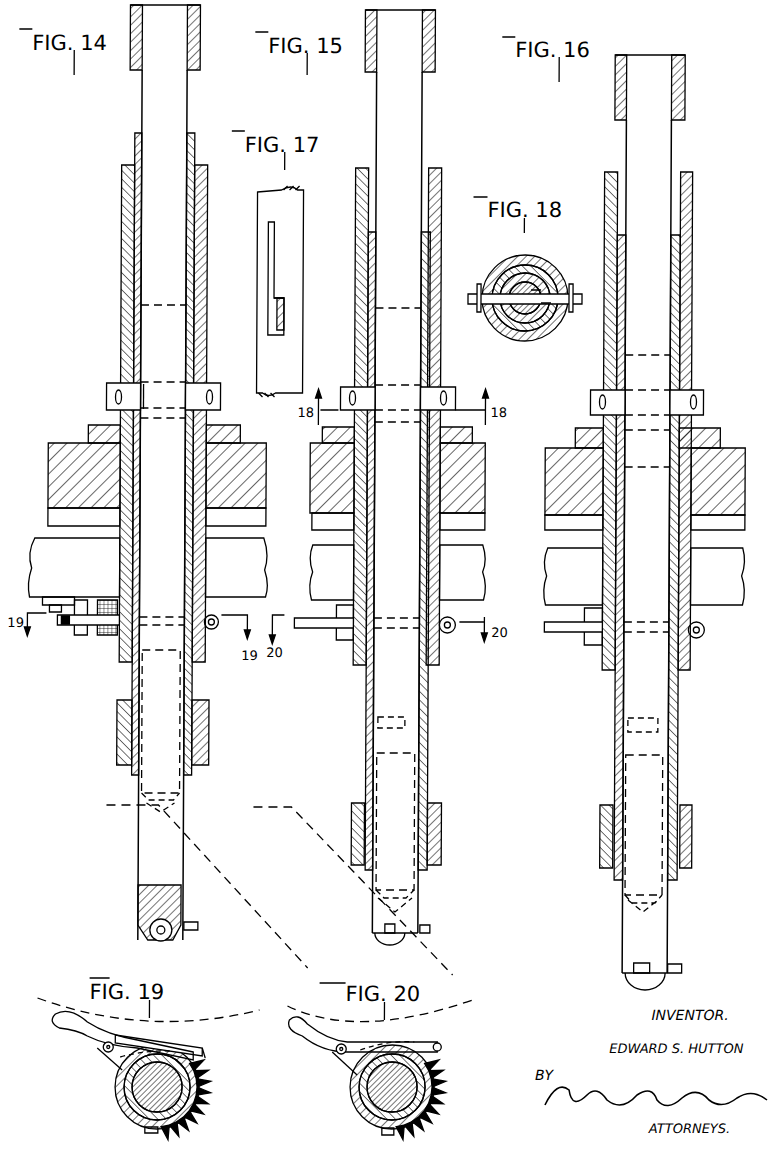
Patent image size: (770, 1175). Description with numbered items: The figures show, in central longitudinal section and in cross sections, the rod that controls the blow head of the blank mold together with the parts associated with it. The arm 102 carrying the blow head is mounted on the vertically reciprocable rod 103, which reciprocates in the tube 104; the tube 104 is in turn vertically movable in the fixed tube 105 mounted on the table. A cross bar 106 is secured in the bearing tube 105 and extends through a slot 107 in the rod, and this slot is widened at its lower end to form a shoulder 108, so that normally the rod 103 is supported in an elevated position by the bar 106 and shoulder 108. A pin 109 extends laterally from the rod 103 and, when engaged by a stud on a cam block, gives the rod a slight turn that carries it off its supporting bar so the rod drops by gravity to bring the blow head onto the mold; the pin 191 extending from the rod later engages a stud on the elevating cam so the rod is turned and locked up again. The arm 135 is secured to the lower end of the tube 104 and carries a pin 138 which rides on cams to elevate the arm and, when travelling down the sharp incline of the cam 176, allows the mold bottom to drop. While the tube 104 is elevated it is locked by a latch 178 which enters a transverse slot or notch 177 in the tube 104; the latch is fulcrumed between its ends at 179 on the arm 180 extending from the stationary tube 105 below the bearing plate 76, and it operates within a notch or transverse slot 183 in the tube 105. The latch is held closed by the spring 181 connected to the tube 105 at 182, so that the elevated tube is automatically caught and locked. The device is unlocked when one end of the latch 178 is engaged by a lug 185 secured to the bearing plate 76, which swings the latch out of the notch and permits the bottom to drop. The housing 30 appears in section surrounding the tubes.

In FIG. 14, the housing block 30 is at (56, 443).
In FIG. 15, the housing block 30 is at (486, 465).
In FIG. 16, the housing block 30 is at (550, 463).
In FIG. 14, the bearing plate 76 is at (38, 553).
In FIG. 15, the bearing plate 76 is at (320, 572).
In FIG. 16, the bearing plate 76 is at (557, 575).
In FIG. 19, the bearing plate 76 is at (50, 1004).
In FIG. 20, the bearing plate 76 is at (292, 1005).
In FIG. 14, the arm 102 is at (202, 68).
In FIG. 15, the arm 102 is at (435, 58).
In FIG. 16, the arm 102 is at (686, 85).
In FIG. 14, the vertically reciprocable rod 103 is at (186, 103).
In FIG. 15, the vertically reciprocable rod 103 is at (422, 108).
In FIG. 17, the vertically reciprocable rod 103 is at (296, 345).
In FIG. 18, the vertically reciprocable rod 103 is at (542, 342).
In FIG. 16, the vertically reciprocable rod 103 is at (672, 144).
In FIG. 19, the vertically reciprocable rod 103 is at (172, 1079).
In FIG. 20, the vertically reciprocable rod 103 is at (410, 1078).
In FIG. 14, the tube 104 is at (132, 146).
In FIG. 15, the tube 104 is at (429, 262).
In FIG. 18, the tube 104 is at (521, 338).
In FIG. 16, the tube 104 is at (680, 292).
In FIG. 19, the tube 104 is at (195, 1093).
In FIG. 20, the tube 104 is at (442, 1095).
In FIG. 14, the fixed tube 105 is at (119, 266).
In FIG. 15, the fixed tube 105 is at (441, 242).
In FIG. 18, the fixed tube 105 is at (496, 330).
In FIG. 16, the fixed tube 105 is at (692, 240).
In FIG. 19, the fixed tube 105 is at (121, 1104).
In FIG. 20, the fixed tube 105 is at (392, 1087).
In FIG. 14, the cross bar 106 is at (214, 384).
In FIG. 15, the cross bar 106 is at (453, 392).
In FIG. 17, the cross bar 106 is at (283, 309).
In FIG. 18, the cross bar 106 is at (560, 296).
In FIG. 16, the cross bar 106 is at (704, 395).
In FIG. 17, the slot 107 is at (267, 240).
In FIG. 18, the slot 107 is at (538, 288).
In FIG. 14, the shoulder 108 is at (146, 385).
In FIG. 17, the shoulder 108 is at (267, 312).
In FIG. 18, the shoulder 108 is at (546, 302).
In FIG. 14, the pin 109 is at (199, 931).
In FIG. 15, the pin 109 is at (432, 934).
In FIG. 16, the pin 109 is at (684, 967).
In FIG. 14, the arm 135 is at (117, 742).
In FIG. 15, the arm 135 is at (353, 818).
In FIG. 16, the arm 135 is at (600, 823).
In FIG. 14, the pin 138 is at (172, 805).
In FIG. 15, the pin 138 is at (418, 896).
In FIG. 16, the pin 138 is at (626, 895).
In FIG. 14, the cam 176 is at (265, 915).
In FIG. 15, the cam 176 is at (278, 806).
In FIG. 14, the transverse slot or notch 177 is at (156, 613).
In FIG. 15, the transverse slot or notch 177 is at (385, 715).
In FIG. 16, the transverse slot or notch 177 is at (640, 716).
In FIG. 19, the transverse slot or notch 177 is at (168, 1045).
In FIG. 14, the latch 178 is at (95, 640).
In FIG. 15, the latch 178 is at (325, 632).
In FIG. 16, the latch 178 is at (573, 634).
In FIG. 19, the latch 178 is at (172, 1042).
In FIG. 20, the latch 178 is at (427, 1042).
In FIG. 19, the fulcrum 179 is at (105, 1049).
In FIG. 20, the fulcrum 179 is at (340, 1056).
In FIG. 14, the arm 180 is at (105, 600).
In FIG. 15, the arm 180 is at (345, 607).
In FIG. 16, the arm 180 is at (596, 612).
In FIG. 19, the arm 180 is at (113, 1061).
In FIG. 20, the arm 180 is at (350, 1062).
In FIG. 19, the spring 181 is at (205, 1113).
In FIG. 20, the spring 181 is at (441, 1111).
In FIG. 19, the connection point 182 is at (154, 1133).
In FIG. 20, the connection point 182 is at (390, 1134).
In FIG. 20, the notch or transverse slot 183 is at (445, 1047).
In FIG. 14, the lug 185 is at (78, 630).
In FIG. 19, the lug 185 is at (72, 1032).
In FIG. 15, the pin 191 is at (385, 926).
In FIG. 16, the pin 191 is at (634, 969).